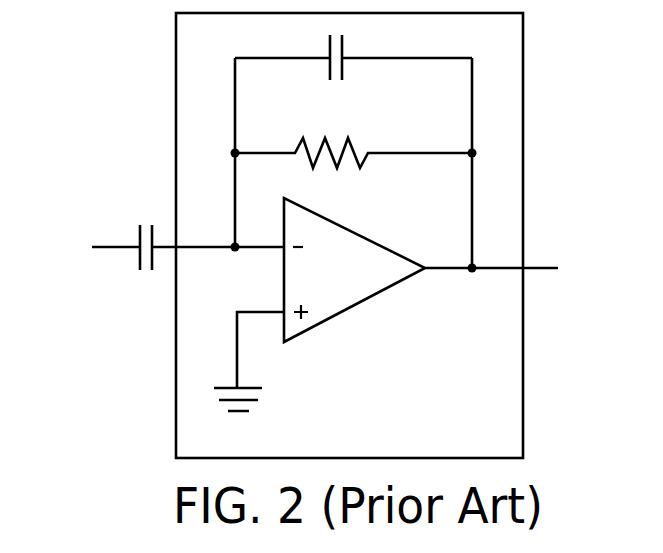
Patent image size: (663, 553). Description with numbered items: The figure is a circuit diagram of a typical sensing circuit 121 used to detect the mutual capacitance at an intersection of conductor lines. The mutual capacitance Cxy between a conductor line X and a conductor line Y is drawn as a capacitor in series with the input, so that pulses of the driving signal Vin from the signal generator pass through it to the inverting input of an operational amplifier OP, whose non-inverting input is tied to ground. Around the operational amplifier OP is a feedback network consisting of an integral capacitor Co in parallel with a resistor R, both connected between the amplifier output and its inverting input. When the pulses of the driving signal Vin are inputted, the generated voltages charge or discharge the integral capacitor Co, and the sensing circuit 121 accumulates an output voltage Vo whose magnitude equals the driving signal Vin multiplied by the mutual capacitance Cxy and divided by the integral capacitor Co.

The sensing circuit 121 is at (176, 93).
The integral capacitor Co is at (353, 145).
The resistor R is at (353, 135).
The mutual capacitance Cxy is at (196, 223).
The driving signal Vin is at (98, 235).
The operational amplifier OP is at (319, 304).
The output voltage Vo is at (498, 250).